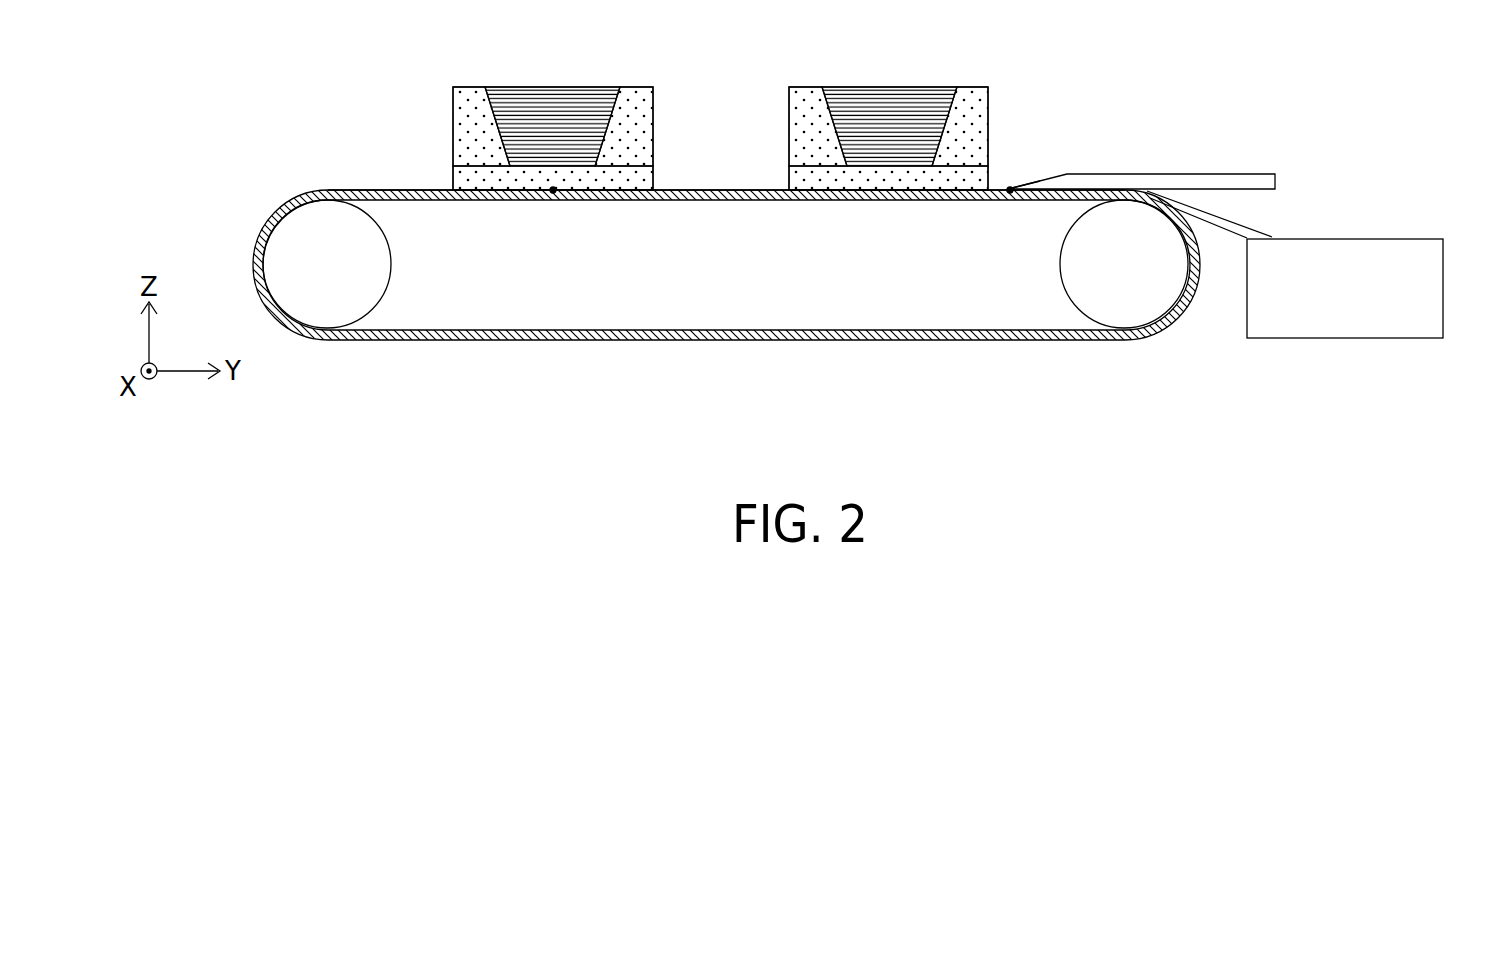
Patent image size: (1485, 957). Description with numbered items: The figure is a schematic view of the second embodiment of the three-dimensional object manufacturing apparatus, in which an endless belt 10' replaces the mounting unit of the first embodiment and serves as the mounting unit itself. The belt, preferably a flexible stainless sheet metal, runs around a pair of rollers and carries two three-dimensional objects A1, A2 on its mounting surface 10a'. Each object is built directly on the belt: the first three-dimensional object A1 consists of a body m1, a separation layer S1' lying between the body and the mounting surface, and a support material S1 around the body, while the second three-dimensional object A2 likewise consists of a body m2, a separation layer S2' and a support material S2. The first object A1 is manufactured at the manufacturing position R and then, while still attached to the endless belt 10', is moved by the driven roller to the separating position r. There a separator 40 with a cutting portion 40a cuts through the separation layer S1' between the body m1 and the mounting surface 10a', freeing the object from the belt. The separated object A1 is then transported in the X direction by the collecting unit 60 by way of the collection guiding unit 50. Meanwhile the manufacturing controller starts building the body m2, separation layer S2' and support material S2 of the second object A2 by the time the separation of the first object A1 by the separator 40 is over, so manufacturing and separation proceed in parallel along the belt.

The endless belt 10' is at (726, 294).
The mounting surface 10a' is at (690, 173).
The separator 40 is at (1237, 174).
The cutting portion 40a is at (1044, 186).
The collection guiding unit 50 is at (1258, 232).
The collecting unit 60 is at (1343, 338).
The three-dimensional object A1 is at (835, 140).
The three-dimensional object A2 is at (499, 140).
The support material S1 is at (859, 126).
The body m1 is at (855, 146).
The separation layer S1' is at (858, 178).
The support material S2 is at (523, 126).
The body m2 is at (520, 146).
The separation layer S2' is at (522, 178).
The manufacturing position R is at (553, 193).
The separating position r is at (1010, 193).